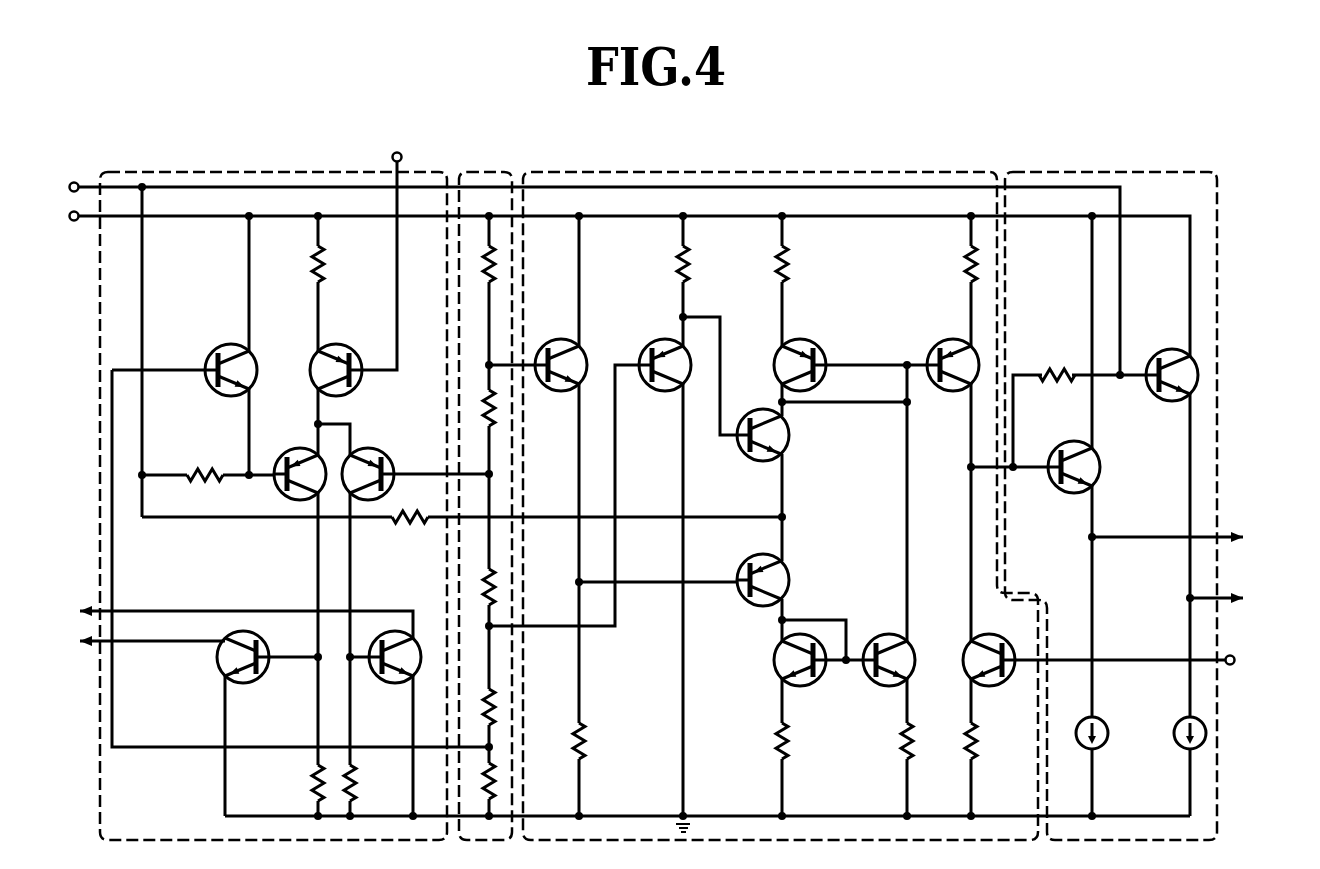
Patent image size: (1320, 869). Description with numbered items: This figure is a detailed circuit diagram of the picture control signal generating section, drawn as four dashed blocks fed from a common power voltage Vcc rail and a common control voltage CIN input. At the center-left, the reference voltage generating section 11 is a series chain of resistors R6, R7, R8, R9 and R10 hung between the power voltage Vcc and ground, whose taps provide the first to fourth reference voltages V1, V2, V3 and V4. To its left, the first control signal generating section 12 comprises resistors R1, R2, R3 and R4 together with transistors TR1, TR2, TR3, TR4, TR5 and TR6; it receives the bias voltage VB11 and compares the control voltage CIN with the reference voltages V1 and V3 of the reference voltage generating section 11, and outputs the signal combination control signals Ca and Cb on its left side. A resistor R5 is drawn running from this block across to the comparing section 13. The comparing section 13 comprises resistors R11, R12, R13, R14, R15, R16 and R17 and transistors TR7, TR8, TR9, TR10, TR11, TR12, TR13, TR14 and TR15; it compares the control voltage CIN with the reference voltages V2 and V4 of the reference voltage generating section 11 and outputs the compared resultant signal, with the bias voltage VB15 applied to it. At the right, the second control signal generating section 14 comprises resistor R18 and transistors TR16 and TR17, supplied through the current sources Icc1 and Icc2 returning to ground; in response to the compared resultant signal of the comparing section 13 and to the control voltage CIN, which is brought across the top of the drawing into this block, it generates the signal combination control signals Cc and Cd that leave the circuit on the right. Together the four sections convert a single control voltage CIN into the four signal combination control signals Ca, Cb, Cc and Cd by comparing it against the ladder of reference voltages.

The reference voltage generating section 11 is at (489, 172).
The first control signal generating section 12 is at (256, 172).
The comparing section 13 is at (782, 172).
The second control signal generating section 14 is at (1085, 172).
The transistor TR1 is at (222, 358).
The transistor TR2 is at (337, 358).
The transistor TR3 is at (293, 463).
The transistor TR4 is at (372, 463).
The transistor TR5 is at (261, 652).
The transistor TR6 is at (391, 669).
The transistor TR7 is at (559, 354).
The transistor TR8 is at (656, 354).
The transistor TR9 is at (800, 354).
The transistor TR10 is at (792, 435).
The transistor TR11 is at (750, 571).
The transistor TR12 is at (806, 642).
The transistor TR13 is at (885, 648).
The transistor TR14 is at (946, 354).
The transistor TR15 is at (995, 650).
The transistor TR16 is at (1100, 467).
The transistor TR17 is at (1165, 364).
The resistor R1 is at (202, 462).
The resistor R2 is at (332, 264).
The resistor R3 is at (300, 783).
The resistor R4 is at (363, 783).
The resistor R5 is at (405, 531).
The resistor R6 is at (481, 264).
The resistor R7 is at (481, 408).
The resistor R8 is at (481, 586).
The resistor R9 is at (480, 708).
The resistor R10 is at (476, 782).
The resistor R11 is at (599, 741).
The resistor R12 is at (704, 264).
The resistor R13 is at (803, 264).
The resistor R14 is at (802, 741).
The resistor R15 is at (950, 264).
The resistor R16 is at (927, 741).
The resistor R17 is at (992, 741).
The resistor R18 is at (1051, 362).
The current source Icc1 is at (1114, 733).
The current source Icc2 is at (1172, 721).
The control voltage CIN is at (53, 189).
The power voltage Vcc is at (53, 219).
The bias voltage VB11 is at (406, 146).
The bias voltage VB15 is at (1261, 661).
The signal combination control signal Ca is at (62, 612).
The signal combination control signal Cb is at (62, 642).
The signal combination control signal Cc is at (1262, 538).
The signal combination control signal Cd is at (1262, 599).
The first reference voltage V1 is at (505, 747).
The second reference voltage V2 is at (476, 630).
The third reference voltage V3 is at (476, 463).
The fourth reference voltage V4 is at (476, 355).